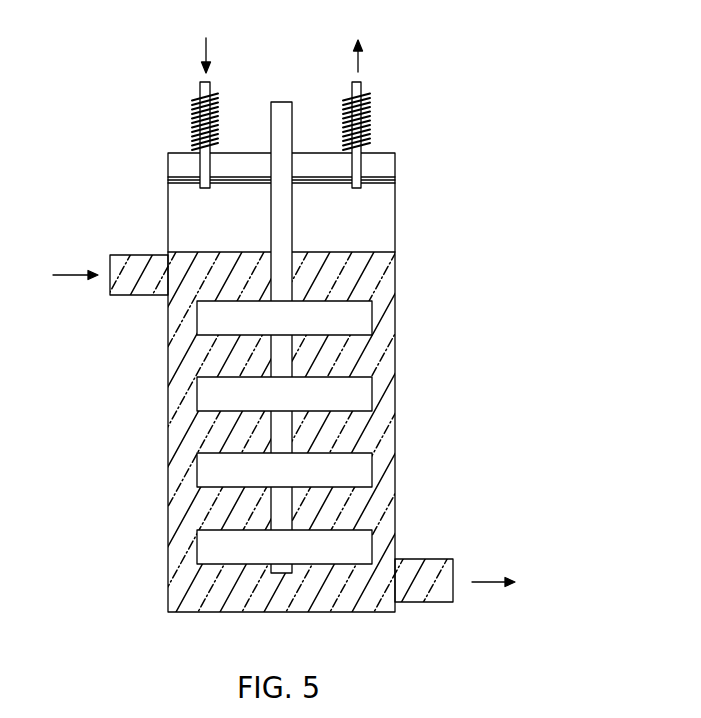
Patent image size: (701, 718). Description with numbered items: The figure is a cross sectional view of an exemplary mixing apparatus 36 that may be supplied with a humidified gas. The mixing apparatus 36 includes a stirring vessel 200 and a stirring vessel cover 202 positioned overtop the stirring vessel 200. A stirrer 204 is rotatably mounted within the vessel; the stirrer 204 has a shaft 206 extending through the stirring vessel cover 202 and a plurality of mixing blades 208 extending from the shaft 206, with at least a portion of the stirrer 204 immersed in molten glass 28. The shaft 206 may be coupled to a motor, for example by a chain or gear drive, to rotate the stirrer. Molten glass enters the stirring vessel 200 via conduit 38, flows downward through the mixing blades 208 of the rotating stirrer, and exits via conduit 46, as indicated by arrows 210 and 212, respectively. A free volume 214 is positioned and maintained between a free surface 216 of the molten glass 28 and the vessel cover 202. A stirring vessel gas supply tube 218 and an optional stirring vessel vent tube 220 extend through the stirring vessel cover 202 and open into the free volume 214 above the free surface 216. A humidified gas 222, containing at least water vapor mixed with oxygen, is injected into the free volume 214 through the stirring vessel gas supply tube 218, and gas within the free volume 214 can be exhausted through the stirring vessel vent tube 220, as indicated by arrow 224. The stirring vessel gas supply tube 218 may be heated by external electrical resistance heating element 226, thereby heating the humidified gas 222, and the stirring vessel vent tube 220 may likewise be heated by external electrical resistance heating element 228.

The mixing apparatus 36 is at (308, 340).
The molten glass 28 is at (382, 285).
The conduit 38 is at (138, 296).
The conduit 46 is at (430, 603).
The stirring vessel 200 is at (395, 480).
The stirring vessel cover 202 is at (182, 152).
The stirrer 204 is at (203, 342).
The shaft 206 is at (265, 420).
The mixing blades 208 is at (395, 387).
The arrow 210 is at (75, 273).
The arrow 212 is at (487, 579).
The free volume 214 is at (255, 232).
The free surface 216 is at (312, 252).
The stirring vessel gas supply tube 218 is at (200, 95).
The stirring vessel vent tube 220 is at (368, 97).
The humidified gas 222 is at (207, 52).
The arrow 224 is at (356, 65).
The external electrical resistance heating element 226 is at (225, 113).
The external electrical resistance heating element 228 is at (372, 140).